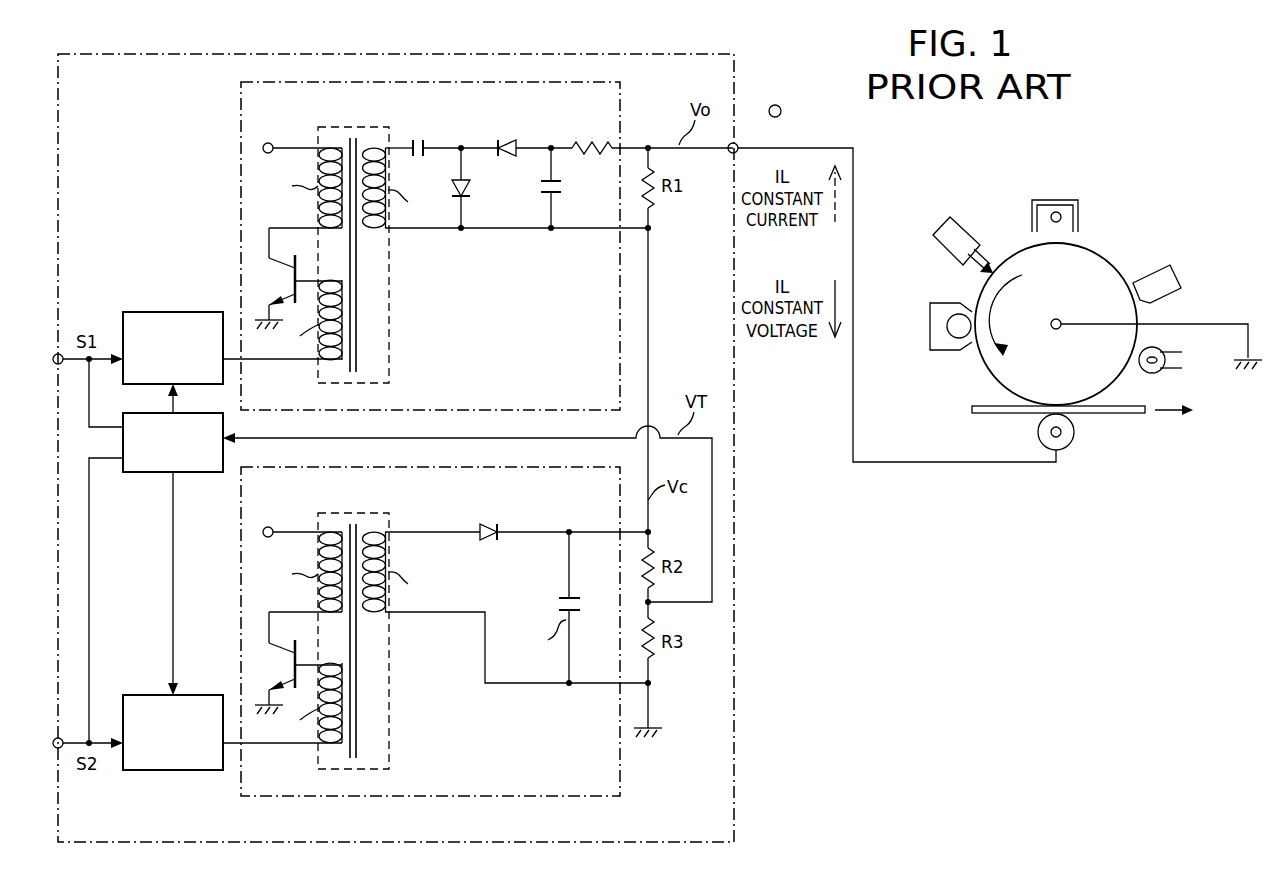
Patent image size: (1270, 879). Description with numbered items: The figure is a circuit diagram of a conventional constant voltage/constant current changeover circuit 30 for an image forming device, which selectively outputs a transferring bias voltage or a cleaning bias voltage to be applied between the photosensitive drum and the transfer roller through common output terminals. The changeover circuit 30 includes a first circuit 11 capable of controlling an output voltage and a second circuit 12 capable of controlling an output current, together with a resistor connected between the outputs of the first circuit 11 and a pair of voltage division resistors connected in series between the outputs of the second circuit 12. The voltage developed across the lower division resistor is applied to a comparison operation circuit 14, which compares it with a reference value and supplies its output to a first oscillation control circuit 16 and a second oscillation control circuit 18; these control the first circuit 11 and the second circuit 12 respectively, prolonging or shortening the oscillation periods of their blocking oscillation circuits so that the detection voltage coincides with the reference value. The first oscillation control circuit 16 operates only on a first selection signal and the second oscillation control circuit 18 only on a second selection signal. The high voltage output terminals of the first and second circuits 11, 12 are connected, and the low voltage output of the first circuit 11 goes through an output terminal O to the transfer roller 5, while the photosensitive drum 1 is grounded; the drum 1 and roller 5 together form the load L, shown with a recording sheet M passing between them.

The photosensitive drum 1 is at (1101, 270).
The transfer roller 5 is at (1074, 432).
The first circuit 11 is at (241, 148).
The second circuit 12 is at (444, 631).
The comparison operation circuit 14 is at (150, 472).
The first oscillation control circuit 16 is at (178, 312).
The second oscillation control circuit 18 is at (188, 697).
The constant voltage/constant current changeover circuit 30 is at (745, 572).
The load L is at (1121, 182).
The recording medium (paper) M is at (992, 417).
The output terminal O is at (738, 145).